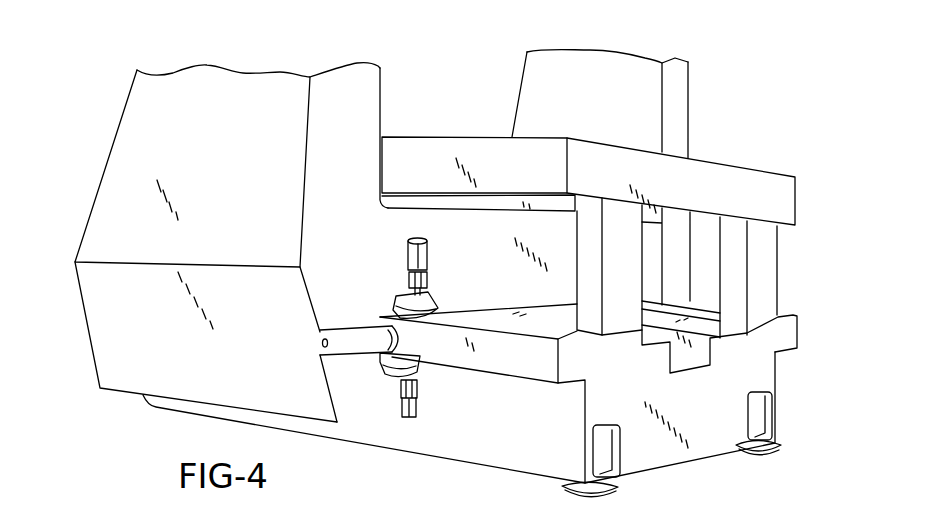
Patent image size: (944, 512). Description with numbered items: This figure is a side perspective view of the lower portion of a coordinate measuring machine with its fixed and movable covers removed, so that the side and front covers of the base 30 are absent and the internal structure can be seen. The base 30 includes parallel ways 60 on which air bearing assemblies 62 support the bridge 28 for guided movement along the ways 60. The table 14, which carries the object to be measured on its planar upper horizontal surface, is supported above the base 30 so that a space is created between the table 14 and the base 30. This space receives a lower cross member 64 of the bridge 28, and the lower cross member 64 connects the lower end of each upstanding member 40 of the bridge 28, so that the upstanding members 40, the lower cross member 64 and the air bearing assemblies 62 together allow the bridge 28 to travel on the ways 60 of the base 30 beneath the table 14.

The table 14 is at (797, 183).
The bridge 28 is at (112, 143).
The base 30 is at (823, 272).
The upstanding member 40 is at (600, 101).
The parallel ways 60 is at (492, 365).
The air bearing assembly 62 is at (395, 297).
The lower cross member 64 is at (503, 258).